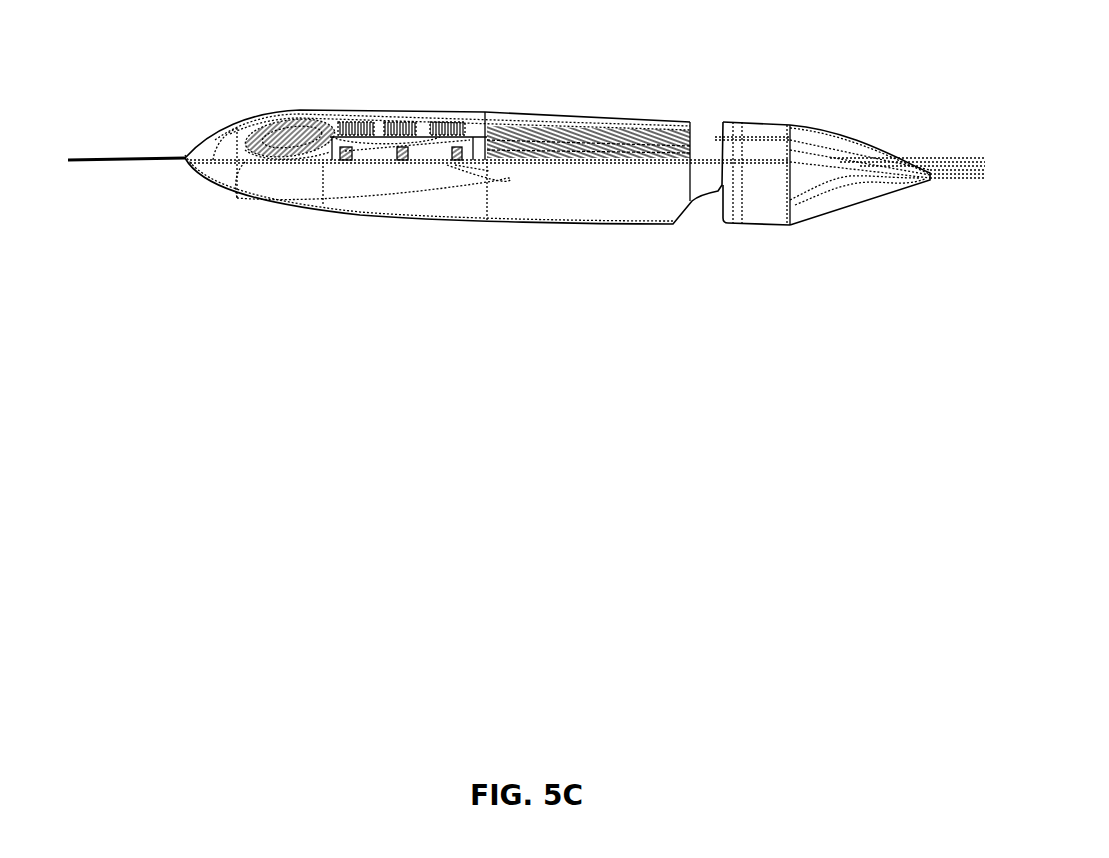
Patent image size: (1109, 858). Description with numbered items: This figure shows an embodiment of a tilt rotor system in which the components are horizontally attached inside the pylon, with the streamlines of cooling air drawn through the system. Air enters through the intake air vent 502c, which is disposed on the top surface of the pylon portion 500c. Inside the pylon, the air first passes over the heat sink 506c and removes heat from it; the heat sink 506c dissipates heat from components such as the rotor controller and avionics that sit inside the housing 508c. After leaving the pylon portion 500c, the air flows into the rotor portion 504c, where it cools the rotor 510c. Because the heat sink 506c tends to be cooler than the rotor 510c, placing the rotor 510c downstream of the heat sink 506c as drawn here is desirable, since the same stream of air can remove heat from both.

The pylon portion 500c is at (615, 115).
The intake air vent 502c is at (282, 108).
The rotor portion 504c is at (862, 145).
The heat sink 506c is at (395, 122).
The housing 508c is at (477, 135).
The rotor 510c is at (760, 122).